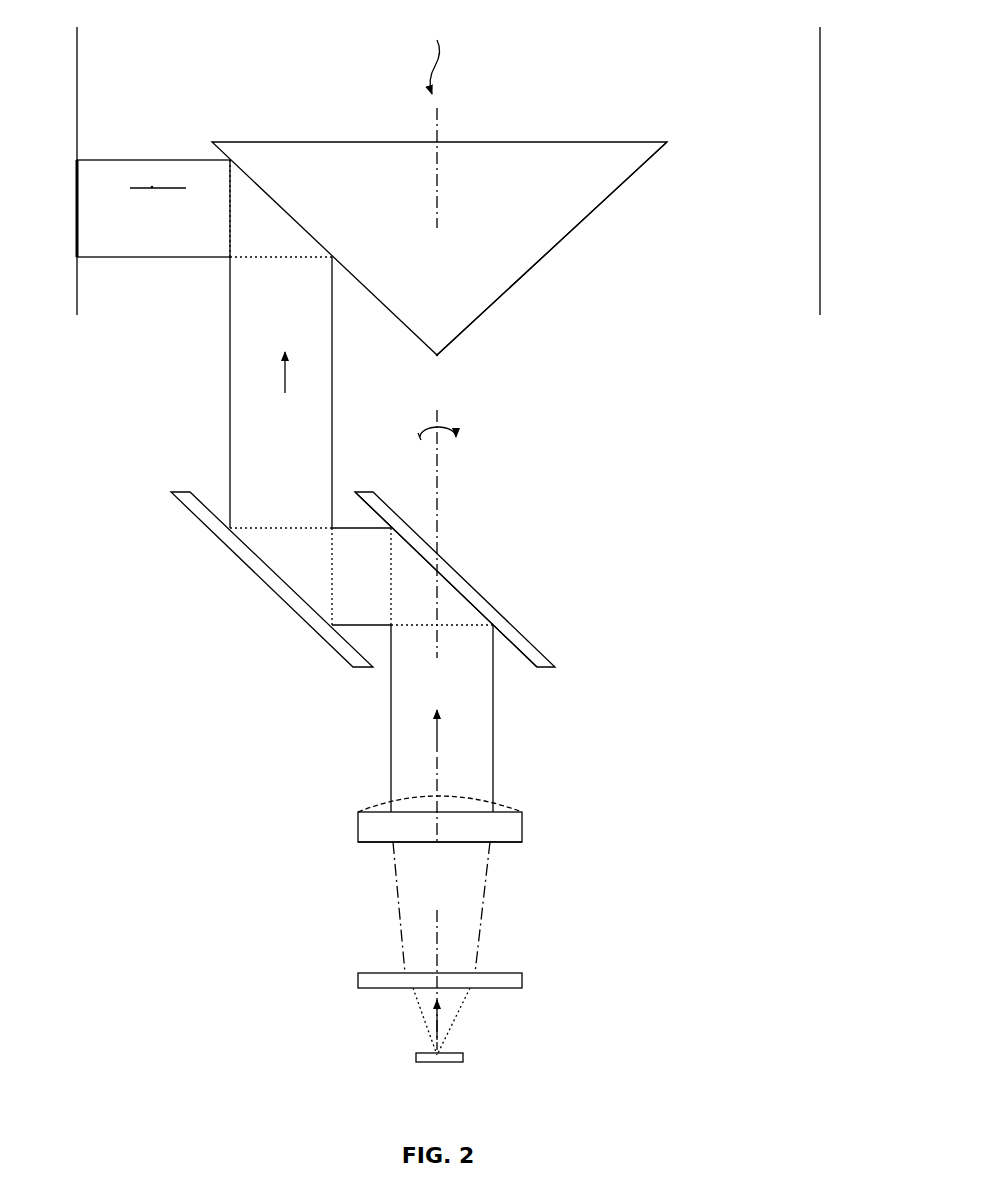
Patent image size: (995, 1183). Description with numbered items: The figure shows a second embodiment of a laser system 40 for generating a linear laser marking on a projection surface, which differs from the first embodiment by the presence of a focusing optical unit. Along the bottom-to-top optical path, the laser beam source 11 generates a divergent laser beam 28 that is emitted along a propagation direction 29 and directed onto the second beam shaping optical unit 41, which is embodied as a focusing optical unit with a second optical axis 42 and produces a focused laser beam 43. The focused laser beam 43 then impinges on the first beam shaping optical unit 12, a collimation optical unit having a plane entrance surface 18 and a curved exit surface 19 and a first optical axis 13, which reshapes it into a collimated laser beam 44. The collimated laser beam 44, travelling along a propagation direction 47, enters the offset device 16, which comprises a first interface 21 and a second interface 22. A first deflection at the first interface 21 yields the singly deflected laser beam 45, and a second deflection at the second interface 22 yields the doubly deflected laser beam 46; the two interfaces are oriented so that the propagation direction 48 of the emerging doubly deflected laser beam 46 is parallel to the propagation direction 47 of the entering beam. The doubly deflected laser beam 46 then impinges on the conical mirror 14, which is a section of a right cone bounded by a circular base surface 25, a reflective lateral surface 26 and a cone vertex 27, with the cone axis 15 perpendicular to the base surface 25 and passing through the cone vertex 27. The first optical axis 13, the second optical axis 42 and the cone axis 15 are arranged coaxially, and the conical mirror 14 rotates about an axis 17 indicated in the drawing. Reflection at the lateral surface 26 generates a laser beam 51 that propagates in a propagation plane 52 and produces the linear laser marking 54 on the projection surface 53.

The laser beam source 11 is at (306, 1026).
The first beam shaping optical unit 12 is at (306, 826).
The first optical axis 13 is at (440, 787).
The conical mirror 14 is at (440, 53).
The cone axis 15 is at (440, 175).
The offset device 16 is at (596, 572).
The rotation axis 17 is at (440, 502).
The entrance surface 18 is at (365, 848).
The exit surface 19 is at (362, 800).
The first interface 21 is at (515, 650).
The second interface 22 is at (212, 497).
The base surface 25 is at (597, 140).
The lateral surface 26 is at (588, 220).
The cone vertex 27 is at (437, 350).
The divergent laser beam 28 is at (422, 1027).
The propagation direction 29 is at (445, 1020).
The laser system 40 is at (717, 980).
The second beam shaping optical unit 41 is at (306, 976).
The second optical axis 42 is at (442, 943).
The focused laser beam 43 is at (487, 897).
The collimated laser beam 44 is at (390, 702).
The singly deflected laser beam 45 is at (347, 530).
The doubly deflected laser beam 46 is at (230, 380).
The propagation direction 47 is at (440, 745).
The propagation direction 48 is at (288, 382).
The laser beam 51 is at (140, 262).
The propagation plane 52 is at (151, 186).
The projection surface 53 is at (78, 57).
The linear laser marking 54 is at (78, 207).